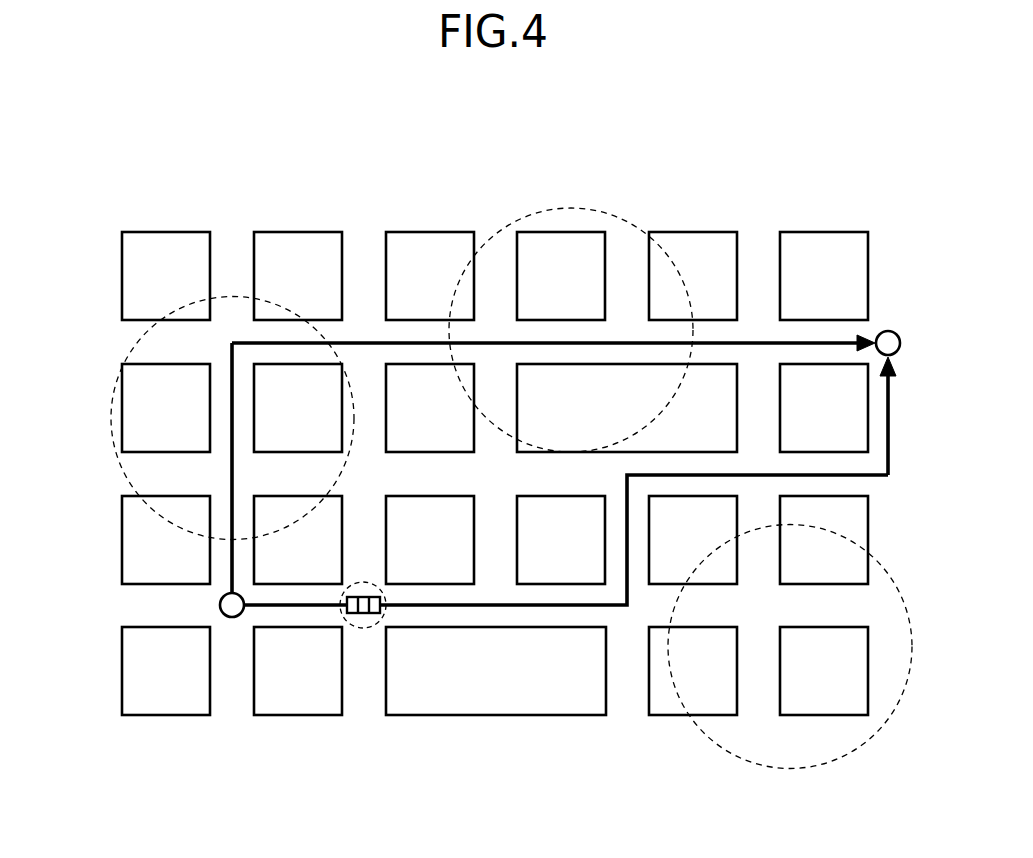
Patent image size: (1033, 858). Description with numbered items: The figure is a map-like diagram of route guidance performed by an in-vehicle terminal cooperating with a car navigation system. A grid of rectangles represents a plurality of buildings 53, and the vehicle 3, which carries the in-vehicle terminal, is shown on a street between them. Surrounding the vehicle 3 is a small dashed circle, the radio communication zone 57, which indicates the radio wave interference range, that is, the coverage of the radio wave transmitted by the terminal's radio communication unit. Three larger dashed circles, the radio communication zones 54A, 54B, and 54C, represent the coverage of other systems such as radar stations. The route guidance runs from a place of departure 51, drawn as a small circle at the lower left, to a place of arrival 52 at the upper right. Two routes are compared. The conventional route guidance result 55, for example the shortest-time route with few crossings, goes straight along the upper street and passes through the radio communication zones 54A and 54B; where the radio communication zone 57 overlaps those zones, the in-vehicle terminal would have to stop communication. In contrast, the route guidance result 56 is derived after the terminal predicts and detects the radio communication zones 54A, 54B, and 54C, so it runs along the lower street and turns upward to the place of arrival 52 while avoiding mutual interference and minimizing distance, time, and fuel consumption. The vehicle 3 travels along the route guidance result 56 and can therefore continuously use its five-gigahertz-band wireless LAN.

The vehicle 3 is at (363, 593).
The place of departure 51 is at (232, 618).
The place of arrival 52 is at (887, 328).
The buildings 53 is at (167, 232).
The radio communication zone of another system 54A is at (111, 412).
The radio communication zone of another system 54B is at (573, 208).
The radio communication zone of another system 54C is at (792, 770).
The conventional route guidance result 55 is at (755, 340).
The route guidance result 56 is at (892, 412).
The radio communication zone 57 is at (363, 630).